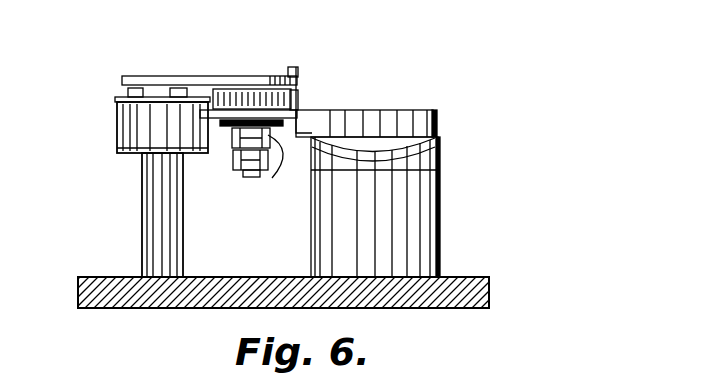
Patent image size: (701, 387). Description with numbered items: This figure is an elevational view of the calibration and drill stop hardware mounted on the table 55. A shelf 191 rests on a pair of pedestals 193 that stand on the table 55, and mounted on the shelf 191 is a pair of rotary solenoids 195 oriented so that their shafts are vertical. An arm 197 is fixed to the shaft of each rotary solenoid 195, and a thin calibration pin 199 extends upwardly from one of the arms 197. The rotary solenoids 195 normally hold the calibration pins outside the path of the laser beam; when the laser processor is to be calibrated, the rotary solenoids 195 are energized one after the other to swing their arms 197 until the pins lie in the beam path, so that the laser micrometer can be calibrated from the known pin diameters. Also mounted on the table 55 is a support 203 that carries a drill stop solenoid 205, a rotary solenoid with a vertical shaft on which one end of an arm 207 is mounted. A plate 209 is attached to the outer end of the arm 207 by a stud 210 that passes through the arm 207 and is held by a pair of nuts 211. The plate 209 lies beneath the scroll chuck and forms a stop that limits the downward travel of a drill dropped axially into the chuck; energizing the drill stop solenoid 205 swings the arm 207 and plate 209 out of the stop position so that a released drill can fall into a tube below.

The table 55 is at (479, 278).
The shelf 191 is at (230, 150).
The pedestals 193 is at (183, 258).
The rotary solenoids 195 is at (116, 134).
The arm 197 is at (214, 79).
The thin calibration pin 199 is at (298, 70).
The support 203 is at (426, 224).
The drill stop solenoid 205 is at (438, 154).
The arm 207 is at (392, 120).
The plate 209 is at (300, 97).
The stud 210 is at (249, 178).
The nuts 211 is at (273, 180).